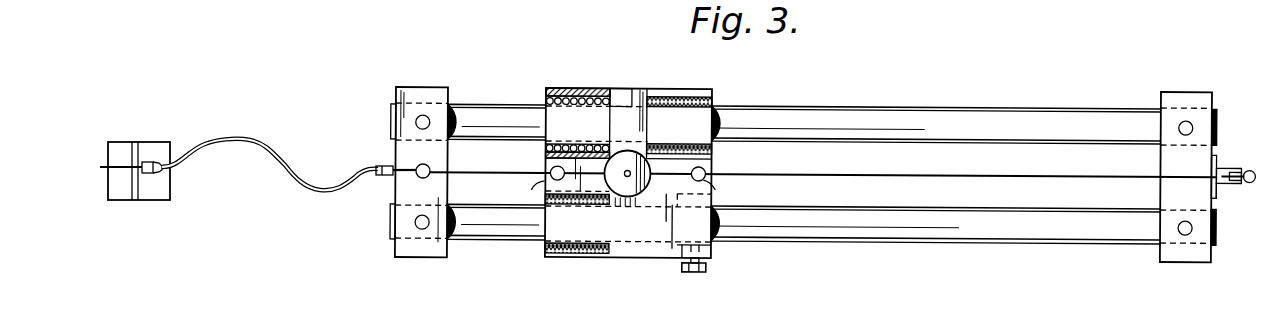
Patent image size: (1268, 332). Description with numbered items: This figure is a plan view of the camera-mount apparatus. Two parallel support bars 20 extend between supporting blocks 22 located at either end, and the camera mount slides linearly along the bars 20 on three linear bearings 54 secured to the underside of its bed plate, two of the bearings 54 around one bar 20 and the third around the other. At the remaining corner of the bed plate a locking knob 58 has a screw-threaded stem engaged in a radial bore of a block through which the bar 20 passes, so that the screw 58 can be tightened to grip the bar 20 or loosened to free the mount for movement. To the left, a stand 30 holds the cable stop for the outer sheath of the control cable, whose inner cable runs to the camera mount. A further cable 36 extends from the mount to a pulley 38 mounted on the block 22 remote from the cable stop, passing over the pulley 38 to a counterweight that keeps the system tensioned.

The support bars 20 is at (962, 117).
The supporting blocks 22 is at (432, 86).
The stand 30 is at (148, 135).
The further cable 36 is at (993, 173).
The pulley 38 is at (1232, 160).
The linear bearings 54 is at (662, 88).
The locking knob 58 is at (708, 267).